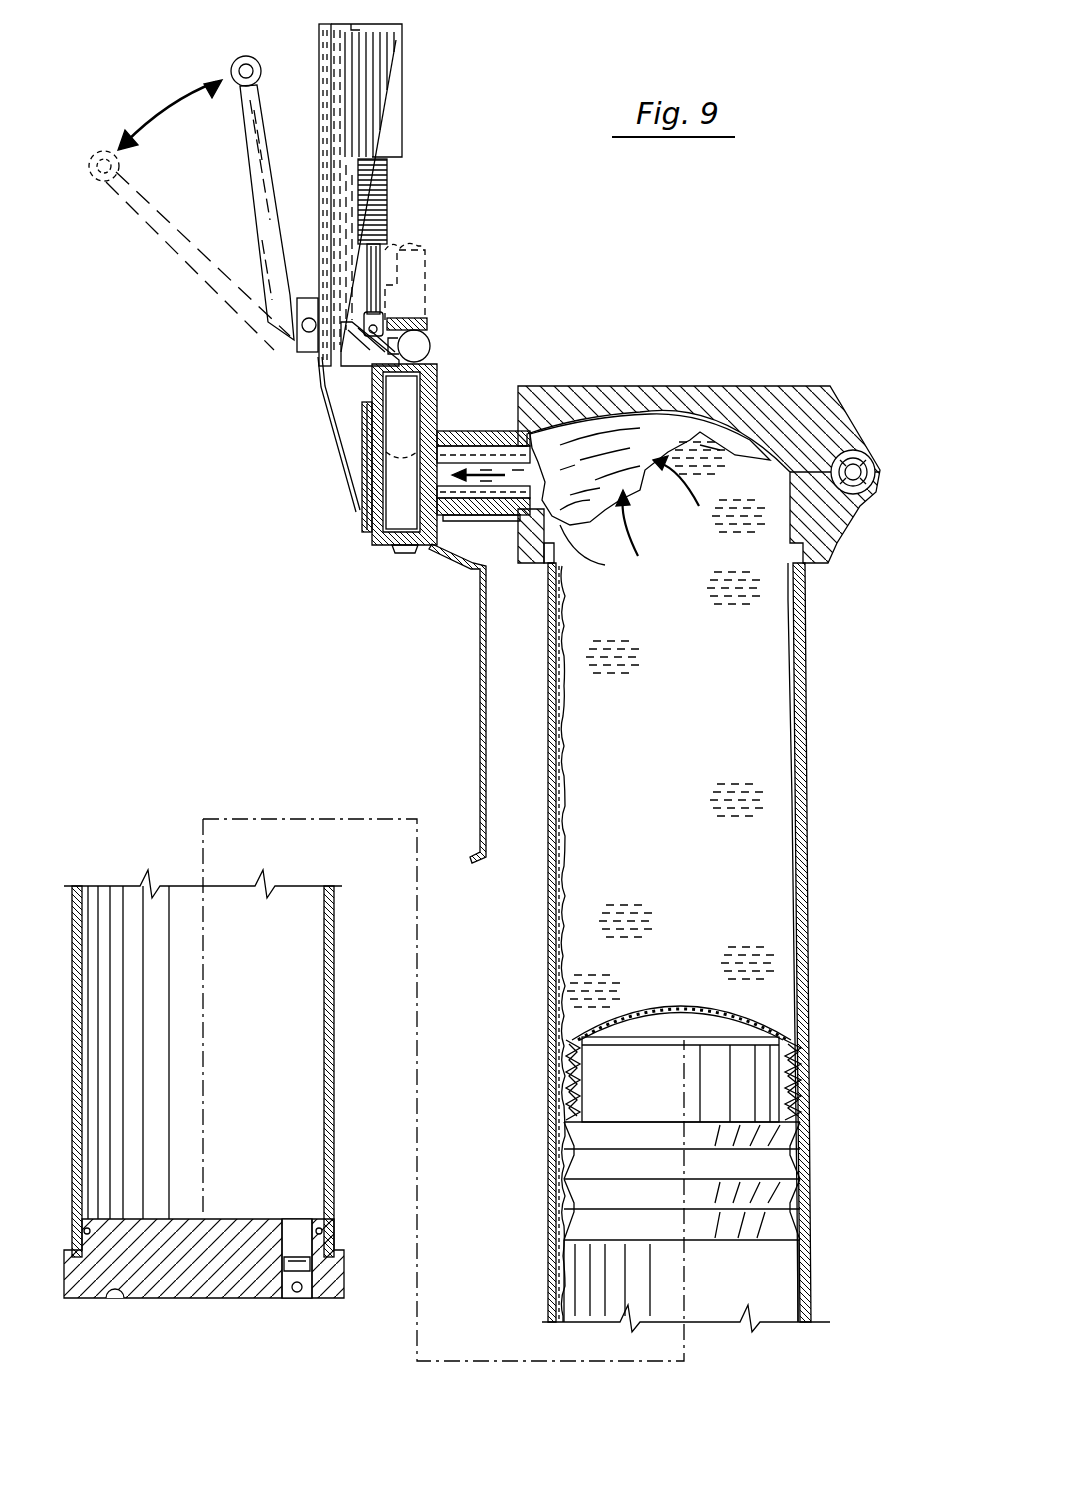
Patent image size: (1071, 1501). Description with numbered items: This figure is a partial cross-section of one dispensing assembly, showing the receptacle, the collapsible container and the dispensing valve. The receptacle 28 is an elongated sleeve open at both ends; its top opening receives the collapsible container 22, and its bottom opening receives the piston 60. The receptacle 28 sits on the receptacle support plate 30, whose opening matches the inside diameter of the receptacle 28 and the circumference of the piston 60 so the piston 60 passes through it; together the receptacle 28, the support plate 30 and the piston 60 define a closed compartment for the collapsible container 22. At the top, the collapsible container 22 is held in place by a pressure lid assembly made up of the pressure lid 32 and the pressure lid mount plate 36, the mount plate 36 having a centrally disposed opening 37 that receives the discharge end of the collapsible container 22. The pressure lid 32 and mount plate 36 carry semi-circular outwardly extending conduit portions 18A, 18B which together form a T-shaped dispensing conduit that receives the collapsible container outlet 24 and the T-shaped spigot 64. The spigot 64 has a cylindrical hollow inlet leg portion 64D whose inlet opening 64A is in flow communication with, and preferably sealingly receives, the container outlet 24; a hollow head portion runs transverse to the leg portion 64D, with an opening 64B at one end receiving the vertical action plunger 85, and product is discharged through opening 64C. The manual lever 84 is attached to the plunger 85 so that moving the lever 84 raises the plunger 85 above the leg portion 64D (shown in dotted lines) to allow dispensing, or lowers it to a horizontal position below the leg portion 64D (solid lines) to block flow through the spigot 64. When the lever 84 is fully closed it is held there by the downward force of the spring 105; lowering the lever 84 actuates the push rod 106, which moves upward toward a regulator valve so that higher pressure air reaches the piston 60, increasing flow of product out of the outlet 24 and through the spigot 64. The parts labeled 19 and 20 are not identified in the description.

The conduit portion 18A is at (458, 432).
The conduit portion 18B is at (466, 520).
The plate 19 is at (358, 430).
The wall 20 is at (358, 458).
The collapsible container 22 is at (567, 832).
The collapsible container outlet 24 is at (533, 428).
The receptacle 28 is at (808, 722).
The receptacle support plate 30 is at (168, 1276).
The pressure lid 32 is at (692, 398).
The pressure lid mount plate 36 is at (838, 512).
The centrally disposed opening 37 is at (583, 514).
The piston 60 is at (656, 1084).
The T-shaped spigot 64 is at (370, 478).
The inlet opening 64A is at (452, 468).
The opening 64B is at (320, 350).
The opening 64C is at (394, 548).
The inlet leg portion 64D is at (447, 518).
The manual lever 84 is at (238, 58).
The vertical action plunger 85 is at (428, 322).
The spring 105 is at (415, 190).
The push rod 106 is at (382, 250).